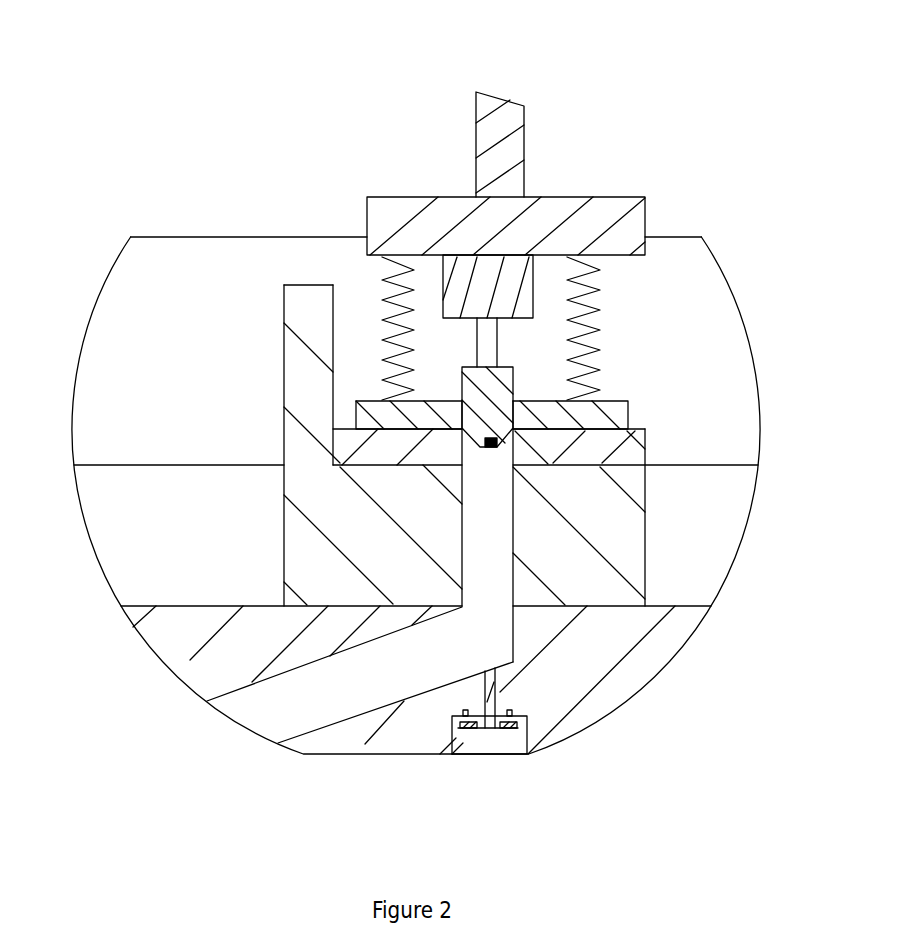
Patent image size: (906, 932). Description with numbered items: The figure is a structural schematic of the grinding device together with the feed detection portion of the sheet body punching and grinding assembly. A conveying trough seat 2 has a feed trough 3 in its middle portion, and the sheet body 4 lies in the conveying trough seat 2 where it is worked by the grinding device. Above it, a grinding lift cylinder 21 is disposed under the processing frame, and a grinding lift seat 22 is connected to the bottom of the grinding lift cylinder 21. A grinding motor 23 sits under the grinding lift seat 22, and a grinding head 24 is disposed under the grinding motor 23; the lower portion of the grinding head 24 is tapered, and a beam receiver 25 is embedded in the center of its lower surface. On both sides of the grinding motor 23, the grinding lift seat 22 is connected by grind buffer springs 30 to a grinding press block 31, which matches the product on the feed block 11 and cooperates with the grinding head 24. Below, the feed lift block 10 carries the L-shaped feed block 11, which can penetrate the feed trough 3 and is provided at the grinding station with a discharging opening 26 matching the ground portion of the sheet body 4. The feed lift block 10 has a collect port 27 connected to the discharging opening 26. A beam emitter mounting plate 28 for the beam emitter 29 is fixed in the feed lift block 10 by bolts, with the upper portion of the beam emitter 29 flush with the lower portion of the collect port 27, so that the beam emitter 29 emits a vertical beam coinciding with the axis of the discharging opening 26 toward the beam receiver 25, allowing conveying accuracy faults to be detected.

The conveying trough seat 2 is at (167, 325).
The feed trough 3 is at (141, 547).
The sheet body 4 is at (433, 428).
The feed lift block 10 is at (196, 629).
The feed block 11 is at (320, 510).
The grinding lift cylinder 21 is at (502, 147).
The grinding lift seat 22 is at (392, 223).
The grinding motor 23 is at (477, 356).
The grinding head 24 is at (495, 395).
The beam receiver 25 is at (490, 447).
The discharging opening 26 is at (495, 560).
The collect port 27 is at (387, 680).
The beam emitter mounting plate 28 is at (492, 717).
The beam emitter 29 is at (497, 722).
The grind buffer spring 30 is at (583, 350).
The grinding press block 31 is at (627, 401).